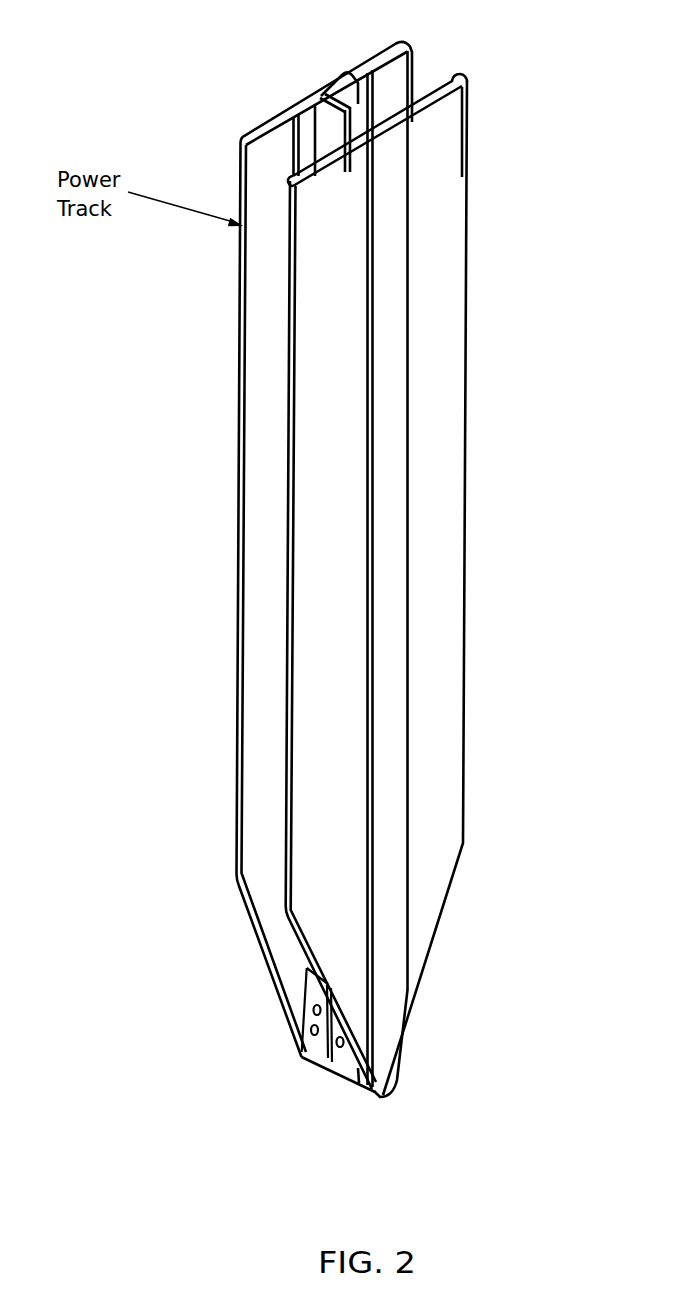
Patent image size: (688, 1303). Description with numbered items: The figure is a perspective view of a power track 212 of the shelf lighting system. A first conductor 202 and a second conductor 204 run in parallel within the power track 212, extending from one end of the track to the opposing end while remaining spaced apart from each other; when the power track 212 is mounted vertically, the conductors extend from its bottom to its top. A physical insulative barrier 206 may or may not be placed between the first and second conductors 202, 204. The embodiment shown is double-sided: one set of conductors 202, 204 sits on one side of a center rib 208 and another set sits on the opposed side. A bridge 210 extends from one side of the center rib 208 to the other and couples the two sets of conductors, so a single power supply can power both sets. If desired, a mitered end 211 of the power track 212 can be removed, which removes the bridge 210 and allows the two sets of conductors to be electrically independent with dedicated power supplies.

The first conductor 202 is at (327, 137).
The second conductor 204 is at (377, 117).
The physical insulative barrier 206 is at (360, 105).
The center rib 208 is at (330, 92).
The bridge 210 is at (313, 1052).
The mitered end 211 is at (453, 893).
The power track 212 is at (236, 624).